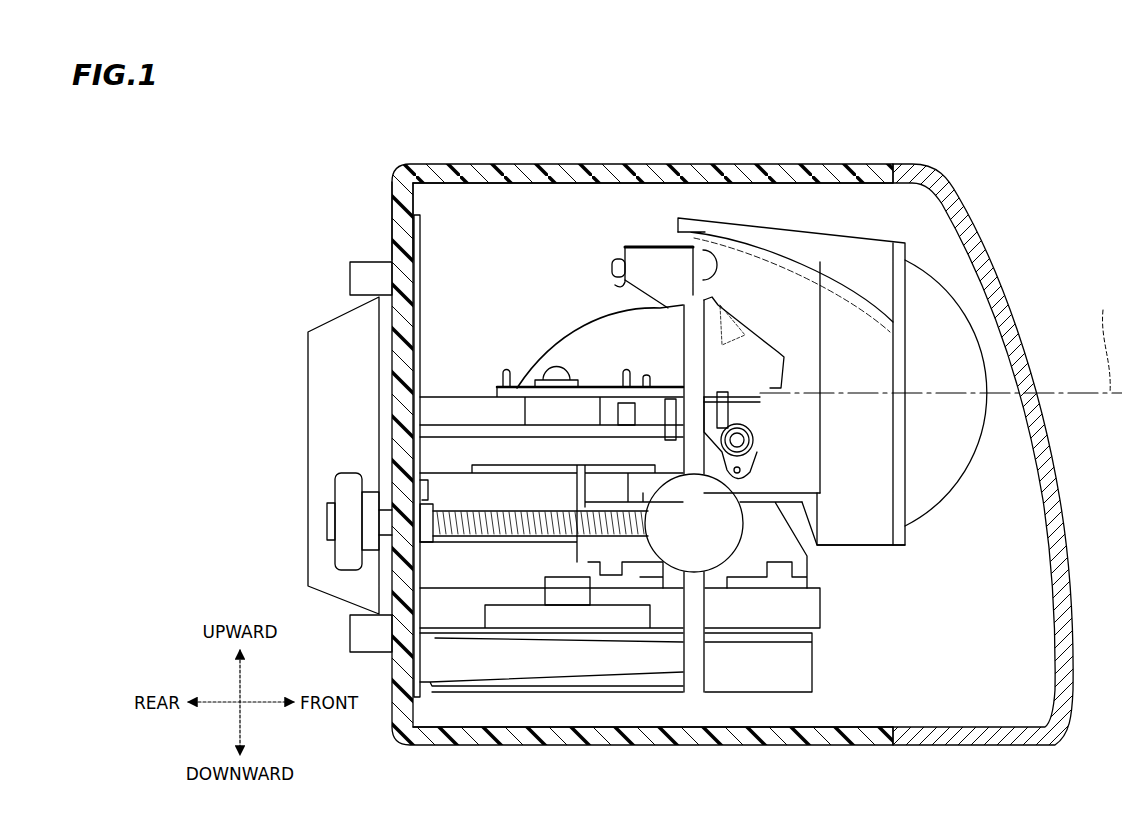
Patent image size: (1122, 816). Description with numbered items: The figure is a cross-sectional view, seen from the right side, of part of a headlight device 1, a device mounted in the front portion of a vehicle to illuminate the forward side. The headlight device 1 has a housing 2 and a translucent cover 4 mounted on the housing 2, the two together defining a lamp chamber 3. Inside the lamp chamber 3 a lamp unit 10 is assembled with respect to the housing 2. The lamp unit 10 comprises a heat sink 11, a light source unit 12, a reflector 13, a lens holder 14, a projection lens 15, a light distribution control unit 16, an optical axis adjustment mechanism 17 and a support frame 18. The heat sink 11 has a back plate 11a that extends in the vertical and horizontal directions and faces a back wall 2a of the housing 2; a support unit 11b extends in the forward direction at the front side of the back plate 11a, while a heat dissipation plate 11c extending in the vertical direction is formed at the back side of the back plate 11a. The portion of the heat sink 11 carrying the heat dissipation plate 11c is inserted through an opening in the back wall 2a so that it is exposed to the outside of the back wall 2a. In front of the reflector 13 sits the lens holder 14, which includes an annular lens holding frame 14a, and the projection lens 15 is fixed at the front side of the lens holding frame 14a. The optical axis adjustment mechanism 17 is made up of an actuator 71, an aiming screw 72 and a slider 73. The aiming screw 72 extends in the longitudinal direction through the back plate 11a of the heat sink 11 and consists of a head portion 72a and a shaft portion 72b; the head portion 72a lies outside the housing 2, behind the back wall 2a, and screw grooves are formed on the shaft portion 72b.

The headlight device 1 is at (1028, 170).
The housing 2 is at (746, 165).
The back wall 2a is at (396, 200).
The lamp chamber 3 is at (848, 200).
The translucent cover 4 is at (942, 190).
The lamp unit 10 is at (944, 607).
The heat sink 11 is at (432, 366).
The back plate 11a is at (420, 262).
The support unit 11b is at (466, 490).
The heat dissipation plate 11c is at (330, 330).
The light source unit 12 is at (533, 479).
The reflector 13 is at (547, 346).
The lens holder 14 is at (817, 224).
The lens holding frame 14a is at (878, 548).
The projection lens 15 is at (958, 485).
The light distribution control unit 16 is at (745, 416).
The optical axis adjustment mechanism 17 is at (668, 699).
The support frame 18 is at (612, 250).
The actuator 71 is at (815, 668).
The aiming screw 72 is at (490, 544).
The head portion 72a is at (335, 560).
The shaft portion 72b is at (530, 546).
The slider 73 is at (812, 558).